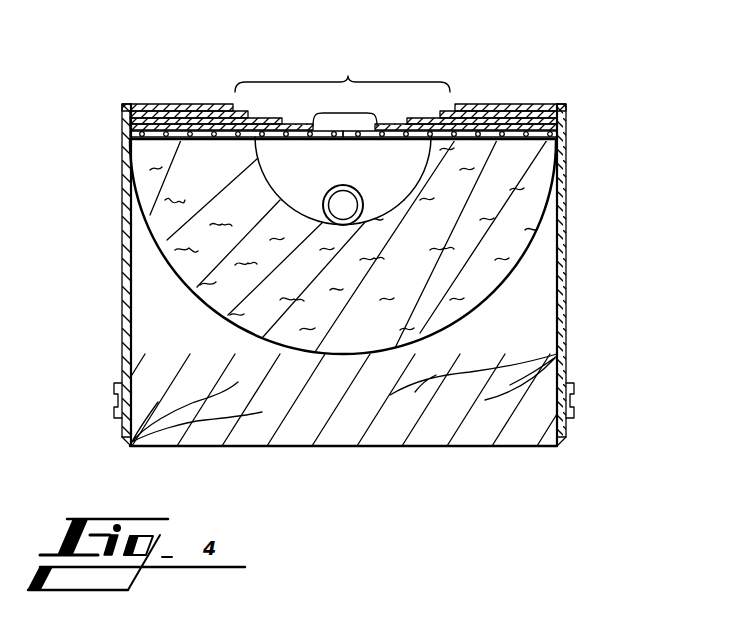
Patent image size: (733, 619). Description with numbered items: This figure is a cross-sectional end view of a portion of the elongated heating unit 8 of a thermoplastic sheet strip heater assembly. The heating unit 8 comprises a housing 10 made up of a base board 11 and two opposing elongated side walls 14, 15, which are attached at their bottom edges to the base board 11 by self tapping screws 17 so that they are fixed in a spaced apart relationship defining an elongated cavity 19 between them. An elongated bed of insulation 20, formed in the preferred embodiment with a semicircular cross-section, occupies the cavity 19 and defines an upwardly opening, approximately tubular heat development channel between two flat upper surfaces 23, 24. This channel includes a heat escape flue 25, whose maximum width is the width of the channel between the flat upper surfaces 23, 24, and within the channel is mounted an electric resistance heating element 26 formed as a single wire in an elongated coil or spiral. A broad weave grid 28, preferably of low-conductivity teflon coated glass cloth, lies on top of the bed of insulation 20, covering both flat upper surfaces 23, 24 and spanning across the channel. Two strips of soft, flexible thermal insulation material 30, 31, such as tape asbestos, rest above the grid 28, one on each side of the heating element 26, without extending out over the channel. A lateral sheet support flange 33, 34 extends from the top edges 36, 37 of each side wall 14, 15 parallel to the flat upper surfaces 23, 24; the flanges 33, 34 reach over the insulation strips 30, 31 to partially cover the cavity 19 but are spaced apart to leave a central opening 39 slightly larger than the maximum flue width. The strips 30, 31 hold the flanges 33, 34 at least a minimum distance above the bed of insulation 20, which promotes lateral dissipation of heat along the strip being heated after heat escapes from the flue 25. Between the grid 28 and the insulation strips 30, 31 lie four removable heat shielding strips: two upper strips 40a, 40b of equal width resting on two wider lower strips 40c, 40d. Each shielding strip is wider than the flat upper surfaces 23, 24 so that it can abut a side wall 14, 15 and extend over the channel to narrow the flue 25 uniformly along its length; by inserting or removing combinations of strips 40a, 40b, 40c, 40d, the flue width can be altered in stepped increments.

The elongated heating unit 8 is at (68, 181).
The housing 10 is at (121, 271).
The base board 11 is at (283, 438).
The side wall 14 is at (124, 315).
The side wall 15 is at (567, 318).
The self tapping screws 17 is at (114, 406).
The elongated cavity 19 is at (160, 324).
The bed of insulation 20 is at (525, 234).
The flat upper surface 23 is at (256, 138).
The flat upper surface 24 is at (455, 138).
The heat escape flue 25 is at (350, 102).
The electric resistance heating element 26 is at (327, 198).
The broad weave grid 28 is at (176, 140).
The strip of thermal insulation material 30 is at (243, 110).
The strip of thermal insulation material 31 is at (446, 110).
The lateral sheet support flange 33 is at (165, 104).
The lateral sheet support flange 34 is at (527, 104).
The top edge of side wall 36 is at (122, 123).
The top edge of side wall 37 is at (566, 120).
The central opening 39 is at (350, 70).
The upper heat shielding strip 40a is at (266, 116).
The upper heat shielding strip 40b is at (425, 118).
The lower heat shielding strip 40c is at (296, 124).
The lower heat shielding strip 40d is at (393, 124).